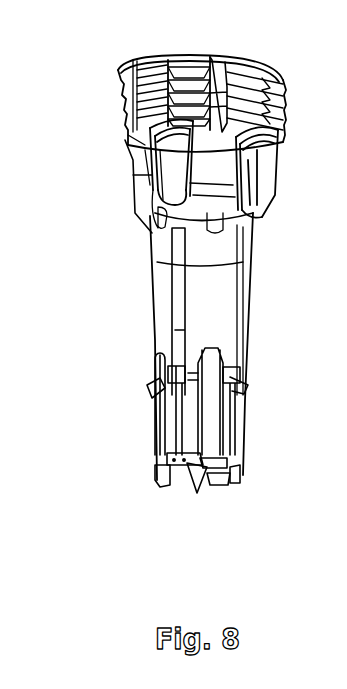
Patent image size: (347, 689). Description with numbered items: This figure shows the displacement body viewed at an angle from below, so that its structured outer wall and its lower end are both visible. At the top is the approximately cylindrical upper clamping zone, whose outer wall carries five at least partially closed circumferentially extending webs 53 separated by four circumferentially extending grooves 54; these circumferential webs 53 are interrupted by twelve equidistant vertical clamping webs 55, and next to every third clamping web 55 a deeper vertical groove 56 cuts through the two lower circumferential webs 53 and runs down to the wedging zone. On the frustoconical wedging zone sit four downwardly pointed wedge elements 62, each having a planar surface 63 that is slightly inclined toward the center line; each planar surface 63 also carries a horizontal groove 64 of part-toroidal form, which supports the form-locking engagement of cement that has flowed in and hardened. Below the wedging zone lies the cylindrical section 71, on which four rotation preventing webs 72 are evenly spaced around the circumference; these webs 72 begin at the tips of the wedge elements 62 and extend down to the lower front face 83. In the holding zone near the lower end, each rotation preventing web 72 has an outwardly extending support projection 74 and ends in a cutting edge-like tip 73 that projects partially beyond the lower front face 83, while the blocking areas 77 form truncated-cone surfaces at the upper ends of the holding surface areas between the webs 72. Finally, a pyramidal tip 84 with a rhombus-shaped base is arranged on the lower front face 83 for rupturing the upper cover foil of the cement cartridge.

The circumferentially extending web 53 is at (150, 66).
The circumferentially extending groove 54 is at (150, 92).
The vertical clamping web 55 is at (136, 108).
The vertical groove 56 is at (135, 118).
The horizontal groove 64 is at (150, 142).
The wedge element 62 is at (172, 180).
The planar surface 63 is at (146, 203).
The rotation preventing web 72 is at (178, 291).
The cylindrical section 71 is at (162, 330).
The support projection 74 is at (160, 388).
The blocking area 77 is at (158, 395).
The cutting edge-like tip 73 is at (162, 486).
The lower front face 83 is at (179, 476).
The pyramidal tip 84 is at (209, 478).